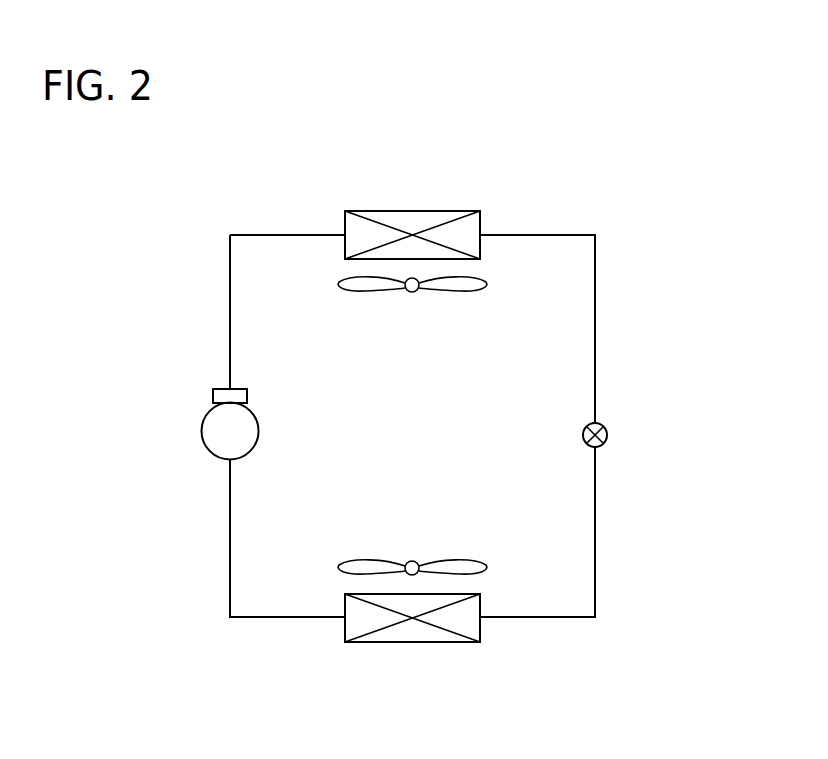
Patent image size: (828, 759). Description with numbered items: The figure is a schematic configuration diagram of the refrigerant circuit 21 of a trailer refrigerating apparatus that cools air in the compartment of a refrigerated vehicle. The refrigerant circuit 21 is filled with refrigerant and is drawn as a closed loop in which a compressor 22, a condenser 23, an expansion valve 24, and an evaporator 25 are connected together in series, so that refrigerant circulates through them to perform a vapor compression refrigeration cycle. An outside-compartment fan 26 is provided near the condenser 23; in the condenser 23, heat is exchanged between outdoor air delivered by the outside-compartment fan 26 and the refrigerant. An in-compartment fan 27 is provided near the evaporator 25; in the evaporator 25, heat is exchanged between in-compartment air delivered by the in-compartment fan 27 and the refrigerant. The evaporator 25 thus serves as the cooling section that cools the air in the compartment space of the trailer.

The refrigerant circuit 21 is at (549, 141).
The compressor 22 is at (202, 429).
The condenser 23 is at (402, 210).
The expansion valve 24 is at (608, 437).
The evaporator 25 is at (402, 642).
The outside-compartment fan 26 is at (458, 292).
The in-compartment fan 27 is at (457, 560).